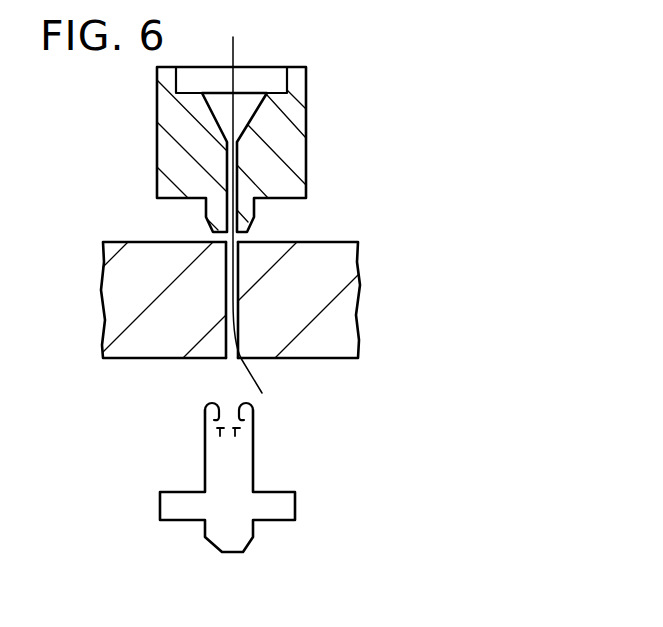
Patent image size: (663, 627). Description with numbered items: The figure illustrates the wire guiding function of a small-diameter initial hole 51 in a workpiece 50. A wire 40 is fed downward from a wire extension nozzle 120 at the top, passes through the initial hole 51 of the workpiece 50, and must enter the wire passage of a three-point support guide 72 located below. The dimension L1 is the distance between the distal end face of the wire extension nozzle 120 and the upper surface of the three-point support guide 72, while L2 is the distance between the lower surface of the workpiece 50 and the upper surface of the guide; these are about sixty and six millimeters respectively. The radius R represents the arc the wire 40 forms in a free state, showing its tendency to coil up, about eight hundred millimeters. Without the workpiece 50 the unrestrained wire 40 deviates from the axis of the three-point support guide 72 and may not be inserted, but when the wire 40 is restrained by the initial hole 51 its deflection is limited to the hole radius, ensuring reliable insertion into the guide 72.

The wire 40 is at (235, 55).
The wire extension nozzle 120 is at (288, 122).
The workpiece 50 is at (322, 252).
The initial hole 51 is at (224, 300).
The three-point support guide 72 is at (278, 508).
The radius of arc formed by the wire in a free state R is at (240, 317).
The distance between nozzle end face and guide upper surface L1 is at (502, 247).
The distance between workpiece lower surface and guide upper surface L2 is at (485, 358).